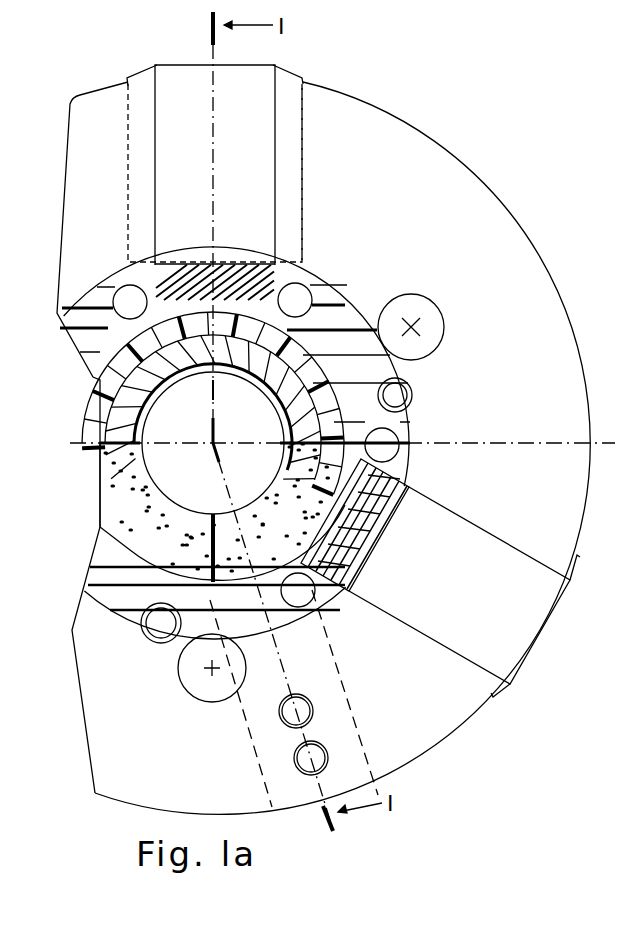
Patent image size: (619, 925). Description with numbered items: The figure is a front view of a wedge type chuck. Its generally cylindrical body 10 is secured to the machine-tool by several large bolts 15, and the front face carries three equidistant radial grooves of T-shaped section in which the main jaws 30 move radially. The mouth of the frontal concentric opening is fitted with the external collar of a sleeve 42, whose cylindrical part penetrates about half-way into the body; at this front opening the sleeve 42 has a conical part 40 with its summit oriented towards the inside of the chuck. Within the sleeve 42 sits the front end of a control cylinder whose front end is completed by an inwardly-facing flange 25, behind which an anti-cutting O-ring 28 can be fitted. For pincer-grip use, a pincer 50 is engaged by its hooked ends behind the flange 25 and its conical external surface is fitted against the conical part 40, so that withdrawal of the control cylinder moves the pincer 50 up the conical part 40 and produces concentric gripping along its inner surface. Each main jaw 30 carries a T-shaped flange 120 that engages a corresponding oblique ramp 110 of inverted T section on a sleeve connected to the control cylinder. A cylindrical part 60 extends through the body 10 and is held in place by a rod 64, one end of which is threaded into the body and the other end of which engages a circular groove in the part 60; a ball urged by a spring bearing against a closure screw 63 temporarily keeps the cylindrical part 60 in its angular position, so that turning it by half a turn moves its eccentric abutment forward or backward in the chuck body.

The chuck body 10 is at (399, 189).
The bolt 15 is at (447, 313).
The flange 25 is at (410, 368).
The O-ring 28 is at (417, 423).
The main jaw 30 is at (258, 116).
The conical part 40 is at (360, 310).
The sleeve 42 is at (320, 337).
The pincer 50 is at (155, 537).
The cylindrical part 60 is at (330, 722).
The closure screw 63 is at (310, 693).
The rod 64 is at (293, 757).
The oblique ramp 110 is at (297, 263).
The flange of main jaw 120 is at (203, 267).